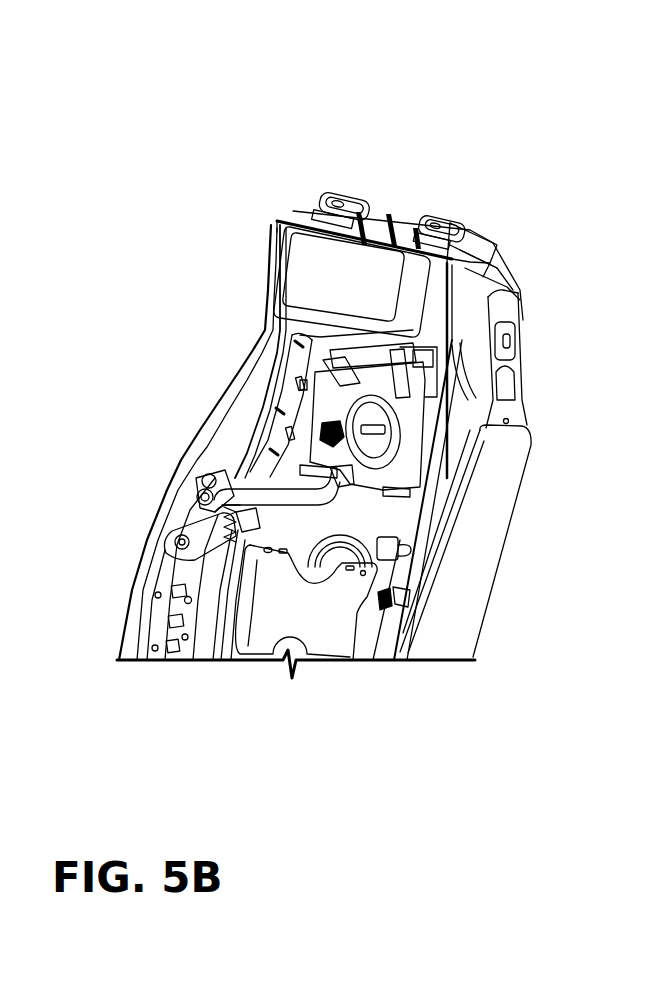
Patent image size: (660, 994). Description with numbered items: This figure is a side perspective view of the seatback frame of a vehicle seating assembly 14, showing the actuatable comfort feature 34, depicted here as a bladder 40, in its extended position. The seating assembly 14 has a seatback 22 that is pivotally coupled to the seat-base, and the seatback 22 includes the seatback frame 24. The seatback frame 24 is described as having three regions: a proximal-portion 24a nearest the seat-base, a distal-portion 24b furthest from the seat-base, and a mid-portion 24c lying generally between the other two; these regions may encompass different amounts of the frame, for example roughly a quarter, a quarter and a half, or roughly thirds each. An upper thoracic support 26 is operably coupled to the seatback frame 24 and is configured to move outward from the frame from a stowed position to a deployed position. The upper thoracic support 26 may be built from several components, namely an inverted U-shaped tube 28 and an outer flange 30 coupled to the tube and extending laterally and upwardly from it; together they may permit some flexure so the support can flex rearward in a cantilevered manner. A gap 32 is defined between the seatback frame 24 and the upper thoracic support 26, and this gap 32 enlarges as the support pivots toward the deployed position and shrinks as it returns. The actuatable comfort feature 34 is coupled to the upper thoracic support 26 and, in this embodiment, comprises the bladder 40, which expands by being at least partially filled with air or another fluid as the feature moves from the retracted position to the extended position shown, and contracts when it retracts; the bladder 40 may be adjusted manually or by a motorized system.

The seating assembly 14 is at (387, 150).
The seatback 22 is at (487, 216).
The seatback frame 24 is at (473, 338).
The proximal-portion 24a is at (118, 651).
The distal-portion 24b is at (320, 213).
The mid-portion 24c is at (205, 487).
The upper thoracic support 26 is at (462, 327).
The U-shaped tube 28 is at (288, 468).
The outer flange 30 is at (288, 383).
The gap 32 is at (490, 385).
The actuatable comfort feature 34 is at (349, 301).
The bladder 40 is at (313, 260).